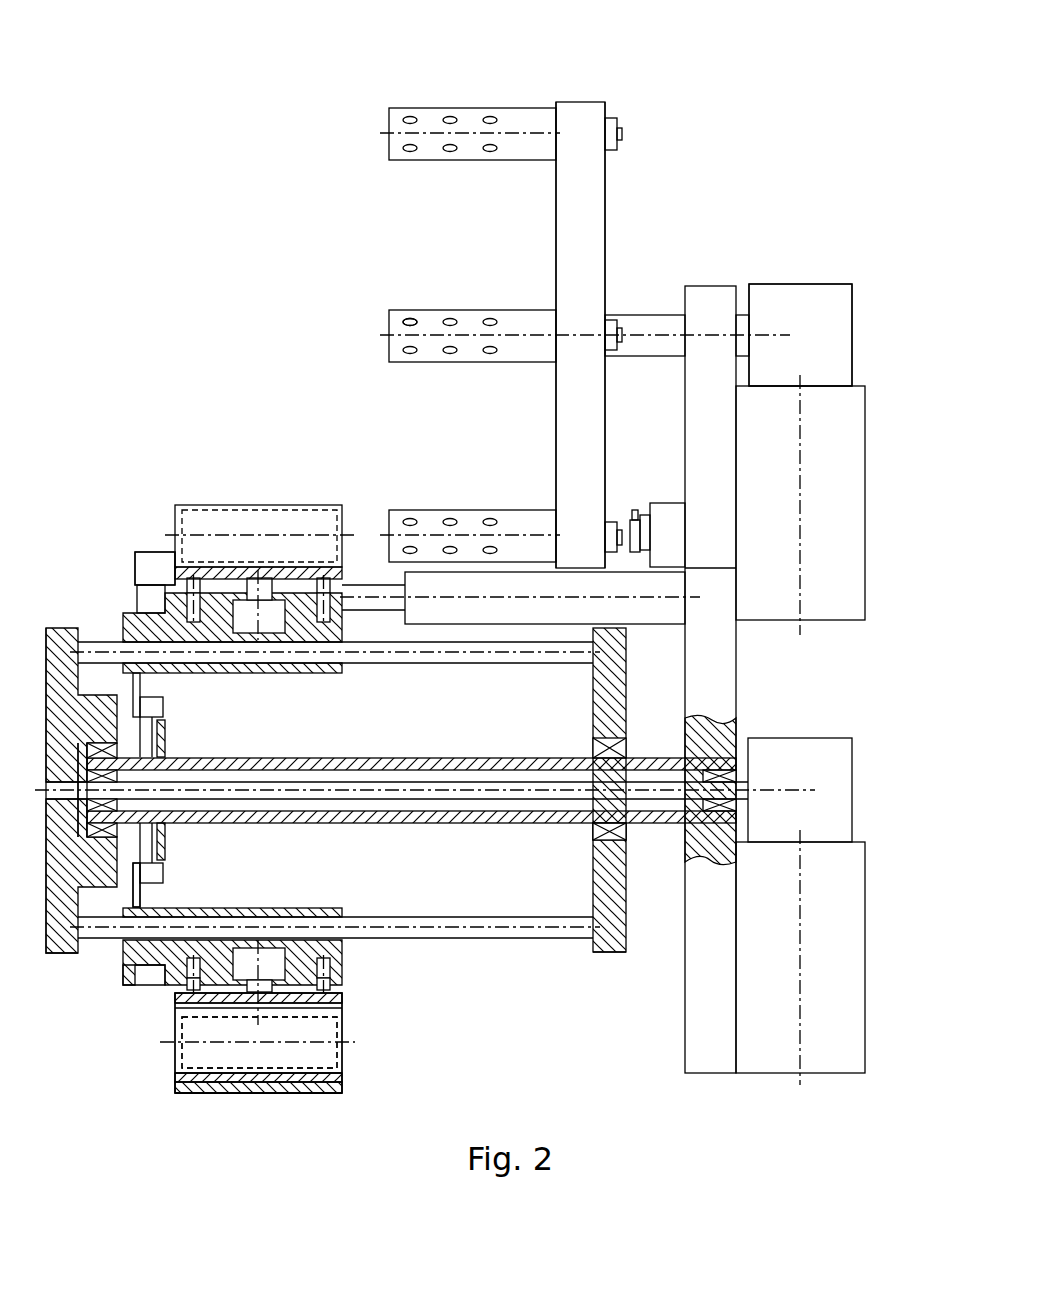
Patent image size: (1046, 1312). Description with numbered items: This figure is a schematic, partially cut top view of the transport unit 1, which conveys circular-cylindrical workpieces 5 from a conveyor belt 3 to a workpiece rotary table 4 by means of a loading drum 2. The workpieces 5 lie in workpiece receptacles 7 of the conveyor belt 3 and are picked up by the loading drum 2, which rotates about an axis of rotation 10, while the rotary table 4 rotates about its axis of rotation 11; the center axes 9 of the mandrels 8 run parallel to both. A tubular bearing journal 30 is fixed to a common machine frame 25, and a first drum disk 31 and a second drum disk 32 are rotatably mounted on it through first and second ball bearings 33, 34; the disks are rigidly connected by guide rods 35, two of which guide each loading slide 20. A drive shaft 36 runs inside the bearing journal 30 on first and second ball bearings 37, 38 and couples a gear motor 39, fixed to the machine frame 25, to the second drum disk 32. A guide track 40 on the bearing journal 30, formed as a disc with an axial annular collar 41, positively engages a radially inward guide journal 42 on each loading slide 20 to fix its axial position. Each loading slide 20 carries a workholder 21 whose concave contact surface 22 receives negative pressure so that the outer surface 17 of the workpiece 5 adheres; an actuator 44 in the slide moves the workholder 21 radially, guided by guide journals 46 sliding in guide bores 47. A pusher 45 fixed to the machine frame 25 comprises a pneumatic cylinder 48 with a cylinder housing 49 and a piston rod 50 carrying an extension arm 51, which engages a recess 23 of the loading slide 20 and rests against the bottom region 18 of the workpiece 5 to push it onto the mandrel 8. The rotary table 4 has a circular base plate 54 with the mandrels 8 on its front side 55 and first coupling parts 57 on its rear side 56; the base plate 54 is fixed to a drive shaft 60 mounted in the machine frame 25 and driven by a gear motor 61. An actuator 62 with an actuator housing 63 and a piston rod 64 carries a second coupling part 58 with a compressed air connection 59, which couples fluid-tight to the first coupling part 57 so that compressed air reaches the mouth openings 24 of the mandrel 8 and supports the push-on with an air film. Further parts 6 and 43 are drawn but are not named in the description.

The transport unit 1 is at (165, 104).
The loading drum 2 is at (516, 968).
The conveyor belt 3 is at (209, 1115).
The workpiece rotary table 4 is at (592, 92).
The workpiece 5 is at (222, 500).
The housing 6 is at (340, 1090).
The workpiece receptacle 7 is at (182, 1080).
The mandrel 8 is at (385, 318).
The center axis 9 is at (440, 130).
The axis of rotation 10 is at (440, 790).
The axis of rotation 11 is at (773, 320).
The outer surface 17 is at (166, 736).
The bottom region 18 is at (173, 1048).
The loading slide 20 is at (335, 958).
The workholder 21 is at (335, 1003).
The contact surface 22 is at (245, 1003).
The recess 23 is at (152, 967).
The mouth opening 24 is at (410, 322).
The machine frame 25 is at (703, 1063).
The bearing journal 30 is at (700, 760).
The first drum disk 31 is at (605, 950).
The second drum disk 32 is at (62, 950).
The first ball bearing 33 is at (620, 832).
The second ball bearing 34 is at (100, 740).
The guide rod 35 is at (415, 940).
The drive shaft 36 is at (540, 800).
The first ball bearing 37 is at (725, 775).
The second ball bearing 38 is at (100, 780).
The gear motor 39 is at (763, 1060).
The guide track 40 is at (333, 505).
The annular collar 41 is at (143, 880).
The guide journal 42 is at (140, 700).
The sealing ring 43 is at (155, 735).
The actuator 44 is at (275, 975).
The pusher 45 is at (128, 555).
The guide journal 46 is at (193, 612).
The guide bore 47 is at (222, 600).
The pneumatic cylinder 48 is at (477, 568).
The cylinder housing 49 is at (440, 595).
The piston rod 50 is at (370, 590).
The extension arm 51 is at (155, 565).
The base plate 54 is at (560, 225).
The front side 55 is at (556, 290).
The rear side 56 is at (605, 242).
The first coupling part 57 is at (613, 143).
The second coupling part 58 is at (608, 532).
The compressed air connection 59 is at (630, 525).
The drive shaft 60 is at (650, 318).
The gear motor 61 is at (820, 300).
The actuator 62 is at (690, 574).
The actuator housing 63 is at (652, 508).
The piston rod 64 is at (640, 520).